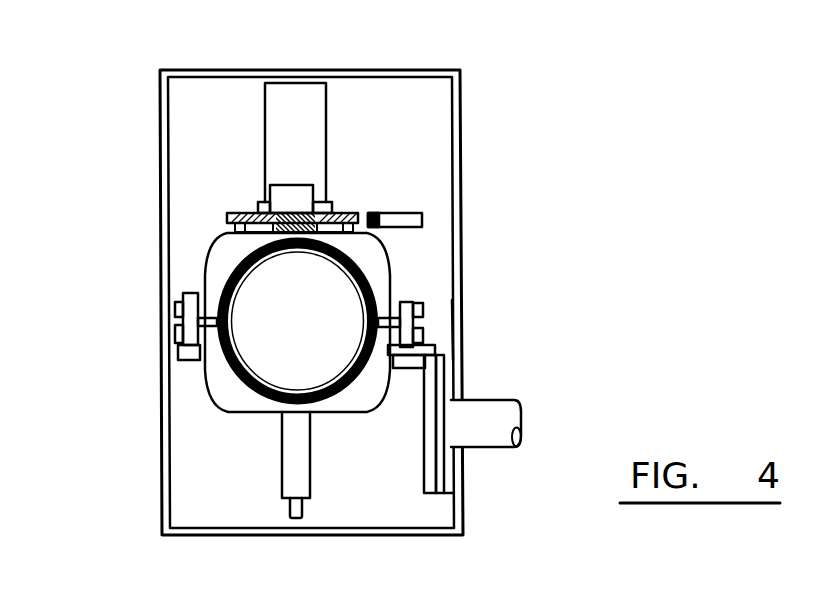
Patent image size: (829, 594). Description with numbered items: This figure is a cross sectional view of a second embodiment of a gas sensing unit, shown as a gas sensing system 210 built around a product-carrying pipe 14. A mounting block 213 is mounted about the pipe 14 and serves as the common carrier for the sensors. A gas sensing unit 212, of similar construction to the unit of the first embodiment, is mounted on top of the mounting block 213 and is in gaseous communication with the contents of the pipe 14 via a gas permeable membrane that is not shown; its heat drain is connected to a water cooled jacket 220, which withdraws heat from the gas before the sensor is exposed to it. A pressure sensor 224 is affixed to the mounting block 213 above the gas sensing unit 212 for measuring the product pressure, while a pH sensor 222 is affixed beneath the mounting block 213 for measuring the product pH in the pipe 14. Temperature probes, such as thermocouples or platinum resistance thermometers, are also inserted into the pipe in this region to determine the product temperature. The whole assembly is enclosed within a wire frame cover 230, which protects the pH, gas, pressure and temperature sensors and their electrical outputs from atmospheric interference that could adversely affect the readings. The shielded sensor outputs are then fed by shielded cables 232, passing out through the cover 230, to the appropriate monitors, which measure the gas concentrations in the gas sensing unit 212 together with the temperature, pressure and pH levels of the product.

The gas sensing system 210 is at (470, 93).
The pressure sensor 224 is at (288, 126).
The gas sensing unit 212 is at (288, 197).
The water cooled jacket 220 is at (229, 219).
The mounting block 213 is at (375, 272).
The wire frame cover 230 is at (462, 330).
The pipe 14 is at (233, 378).
The pH sensor 222 is at (293, 448).
The shielded cables 232 is at (478, 432).